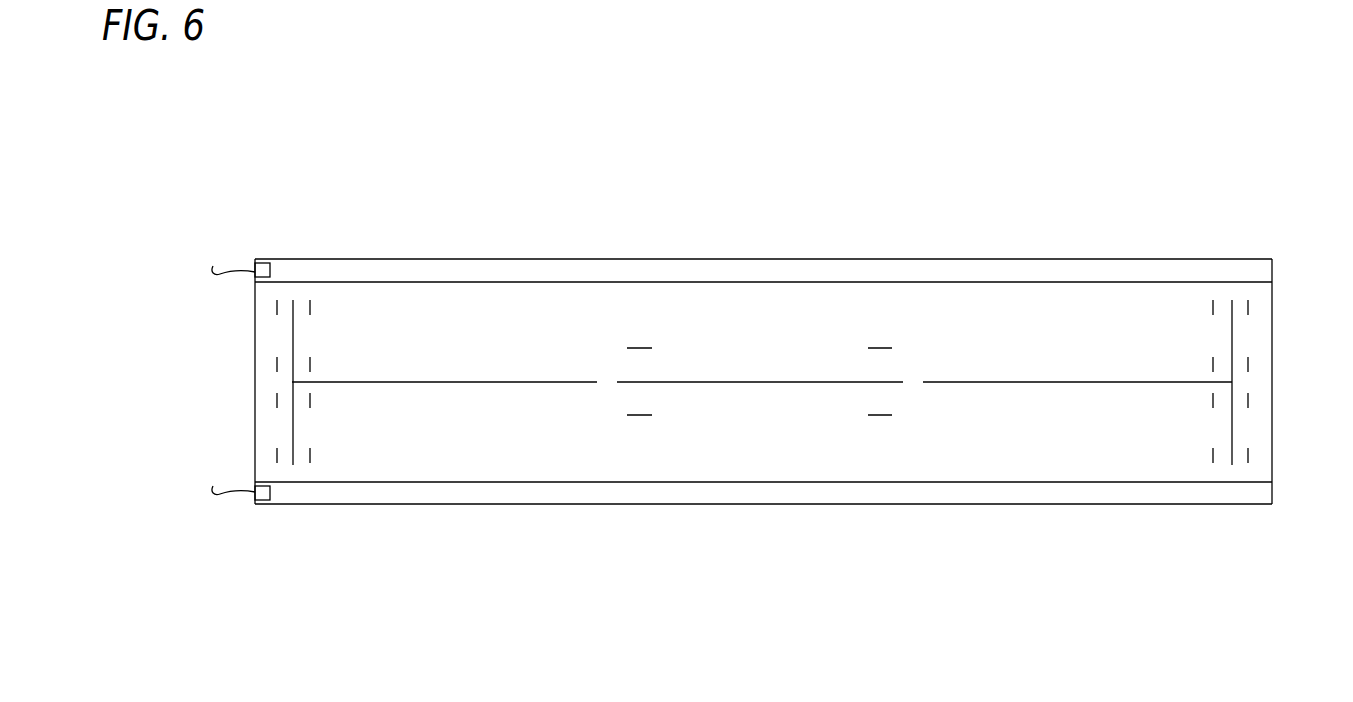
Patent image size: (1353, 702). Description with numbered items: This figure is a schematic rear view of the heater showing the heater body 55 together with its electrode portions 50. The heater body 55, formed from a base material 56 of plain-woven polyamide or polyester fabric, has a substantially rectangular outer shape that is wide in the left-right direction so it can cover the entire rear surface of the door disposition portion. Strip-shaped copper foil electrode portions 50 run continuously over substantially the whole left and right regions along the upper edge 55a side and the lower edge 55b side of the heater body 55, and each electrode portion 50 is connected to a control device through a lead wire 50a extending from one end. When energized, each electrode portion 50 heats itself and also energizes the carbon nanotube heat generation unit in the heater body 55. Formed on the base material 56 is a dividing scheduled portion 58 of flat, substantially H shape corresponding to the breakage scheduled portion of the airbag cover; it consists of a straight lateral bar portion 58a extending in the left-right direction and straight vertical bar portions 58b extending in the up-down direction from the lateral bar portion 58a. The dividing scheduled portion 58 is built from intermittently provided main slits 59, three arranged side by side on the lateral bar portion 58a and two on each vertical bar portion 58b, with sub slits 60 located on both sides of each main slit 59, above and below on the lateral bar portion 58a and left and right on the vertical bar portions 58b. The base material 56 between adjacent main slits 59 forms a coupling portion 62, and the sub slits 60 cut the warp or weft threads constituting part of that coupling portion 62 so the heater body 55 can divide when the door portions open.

The electrode portion 50 is at (1005, 268).
The lead wire 50a is at (226, 268).
The heater body 55 is at (1278, 325).
The upper edge 55a is at (1138, 265).
The lower edge 55b is at (1137, 497).
The base material 56 is at (428, 462).
The dividing scheduled portion 58 is at (769, 340).
The lateral bar portion 58a is at (764, 387).
The vertical bar portion 58b is at (300, 468).
The main slit 59 is at (293, 312).
The sub slit 60 is at (312, 307).
The coupling portion 62 is at (607, 386).